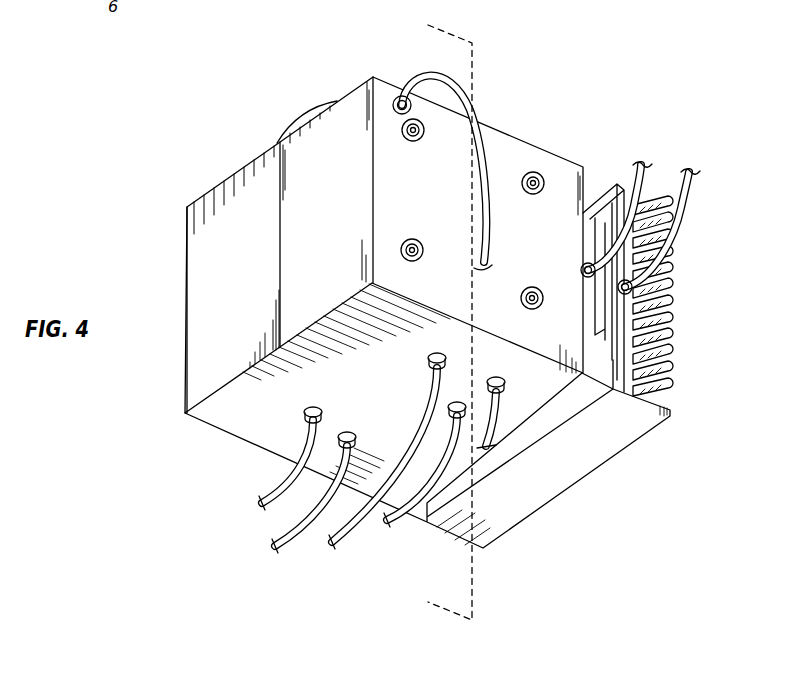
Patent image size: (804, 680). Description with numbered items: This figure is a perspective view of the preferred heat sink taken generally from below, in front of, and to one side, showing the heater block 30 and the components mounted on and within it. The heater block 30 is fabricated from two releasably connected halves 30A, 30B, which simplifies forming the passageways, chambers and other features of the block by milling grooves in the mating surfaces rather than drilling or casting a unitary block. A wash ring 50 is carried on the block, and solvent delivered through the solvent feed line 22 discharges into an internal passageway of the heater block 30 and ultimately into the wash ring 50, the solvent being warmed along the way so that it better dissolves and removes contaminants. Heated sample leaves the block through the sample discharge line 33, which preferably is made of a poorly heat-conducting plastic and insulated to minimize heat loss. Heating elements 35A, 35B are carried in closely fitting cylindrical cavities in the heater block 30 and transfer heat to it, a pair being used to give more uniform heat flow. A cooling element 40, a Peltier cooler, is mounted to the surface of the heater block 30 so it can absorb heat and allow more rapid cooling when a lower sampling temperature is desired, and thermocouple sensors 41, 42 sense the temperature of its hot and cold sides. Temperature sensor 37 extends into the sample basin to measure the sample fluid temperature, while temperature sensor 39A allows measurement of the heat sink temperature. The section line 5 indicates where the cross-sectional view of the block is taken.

The heater block 30 is at (200, 357).
The heater block half 30A is at (252, 279).
The heater block half 30B is at (347, 219).
The wash ring 50 is at (305, 115).
The sample discharge line 33 is at (438, 76).
The thermocouple sensor 42 is at (586, 268).
The thermocouple sensor 41 is at (672, 318).
The cooling element 40 is at (593, 456).
The temperature sensor 39A is at (497, 378).
The heating element 35A is at (350, 433).
The heating element 35B is at (433, 356).
The temperature sensor 37 is at (309, 416).
The solvent feed line 22 is at (412, 518).
The section line 5- 5 is at (434, 313).